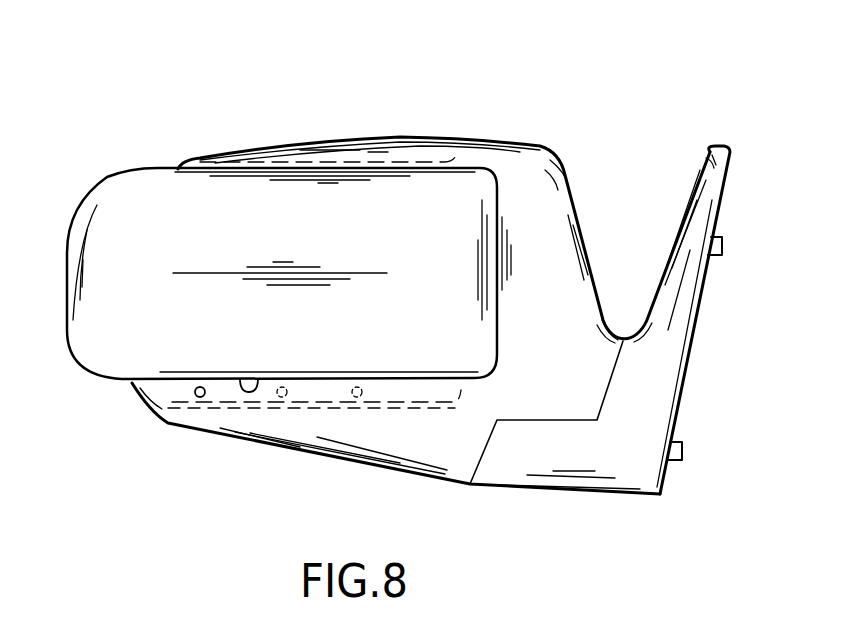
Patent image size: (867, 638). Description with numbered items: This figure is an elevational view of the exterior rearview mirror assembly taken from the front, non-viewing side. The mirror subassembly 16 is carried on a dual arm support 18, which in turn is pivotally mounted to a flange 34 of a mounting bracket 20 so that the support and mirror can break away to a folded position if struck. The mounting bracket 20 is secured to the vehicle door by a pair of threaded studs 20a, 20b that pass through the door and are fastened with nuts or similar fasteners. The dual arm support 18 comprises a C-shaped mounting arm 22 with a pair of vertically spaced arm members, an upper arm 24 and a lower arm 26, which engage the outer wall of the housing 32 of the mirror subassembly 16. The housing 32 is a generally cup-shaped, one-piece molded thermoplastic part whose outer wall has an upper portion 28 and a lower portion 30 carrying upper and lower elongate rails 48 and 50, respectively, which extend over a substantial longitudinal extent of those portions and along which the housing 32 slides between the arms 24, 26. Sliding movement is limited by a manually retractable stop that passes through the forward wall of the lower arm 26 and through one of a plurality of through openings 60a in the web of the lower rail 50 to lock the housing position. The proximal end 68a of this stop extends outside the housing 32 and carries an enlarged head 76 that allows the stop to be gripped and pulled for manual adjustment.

The mirror subassembly 16 is at (126, 168).
The dual arm support 18 is at (597, 237).
The mounting bracket 20 is at (717, 138).
The threaded stud 20a is at (722, 238).
The threaded stud 20b is at (683, 446).
The C-shaped mounting arm 22 is at (563, 170).
The upper arm member 24 is at (383, 148).
The lower arm member 26 is at (293, 453).
The upper portion of outer wall 28 is at (305, 165).
The lower portion of outer wall 30 is at (258, 378).
The housing 32 is at (241, 198).
The flange 34 is at (540, 460).
The upper elongate rail 48 is at (457, 155).
The lower elongate rail 50 is at (397, 406).
The through opening 60a is at (287, 387).
The proximal end of stop 68a is at (194, 395).
The enlarged head 76 is at (215, 398).